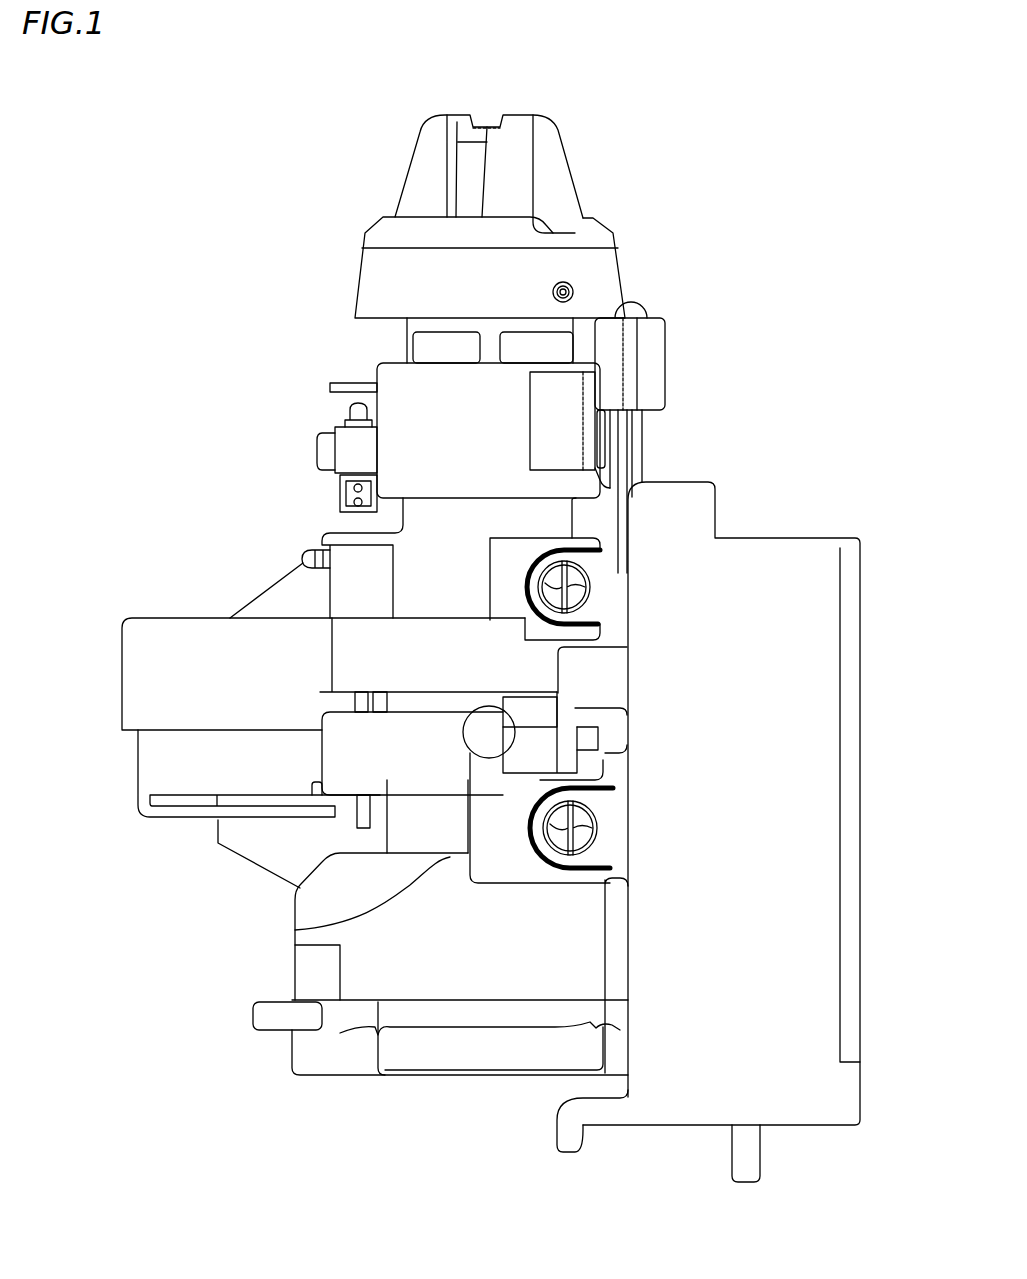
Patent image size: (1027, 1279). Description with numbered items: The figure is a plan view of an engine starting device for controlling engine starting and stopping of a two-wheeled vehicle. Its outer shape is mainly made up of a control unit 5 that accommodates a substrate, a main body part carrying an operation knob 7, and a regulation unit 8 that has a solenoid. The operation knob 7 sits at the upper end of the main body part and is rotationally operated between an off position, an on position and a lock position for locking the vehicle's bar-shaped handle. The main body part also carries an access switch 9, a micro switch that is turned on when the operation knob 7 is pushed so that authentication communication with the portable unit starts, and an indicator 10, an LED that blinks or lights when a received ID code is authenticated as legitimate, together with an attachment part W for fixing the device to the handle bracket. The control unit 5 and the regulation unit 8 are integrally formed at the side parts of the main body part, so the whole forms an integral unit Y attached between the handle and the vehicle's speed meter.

The control unit 5 is at (800, 547).
The operation knob 7 is at (376, 282).
The regulation unit 8 is at (168, 616).
The access switch 9 is at (348, 411).
The indicator 10 is at (667, 351).
The attachment part W is at (258, 848).
The integral unit Y is at (676, 190).